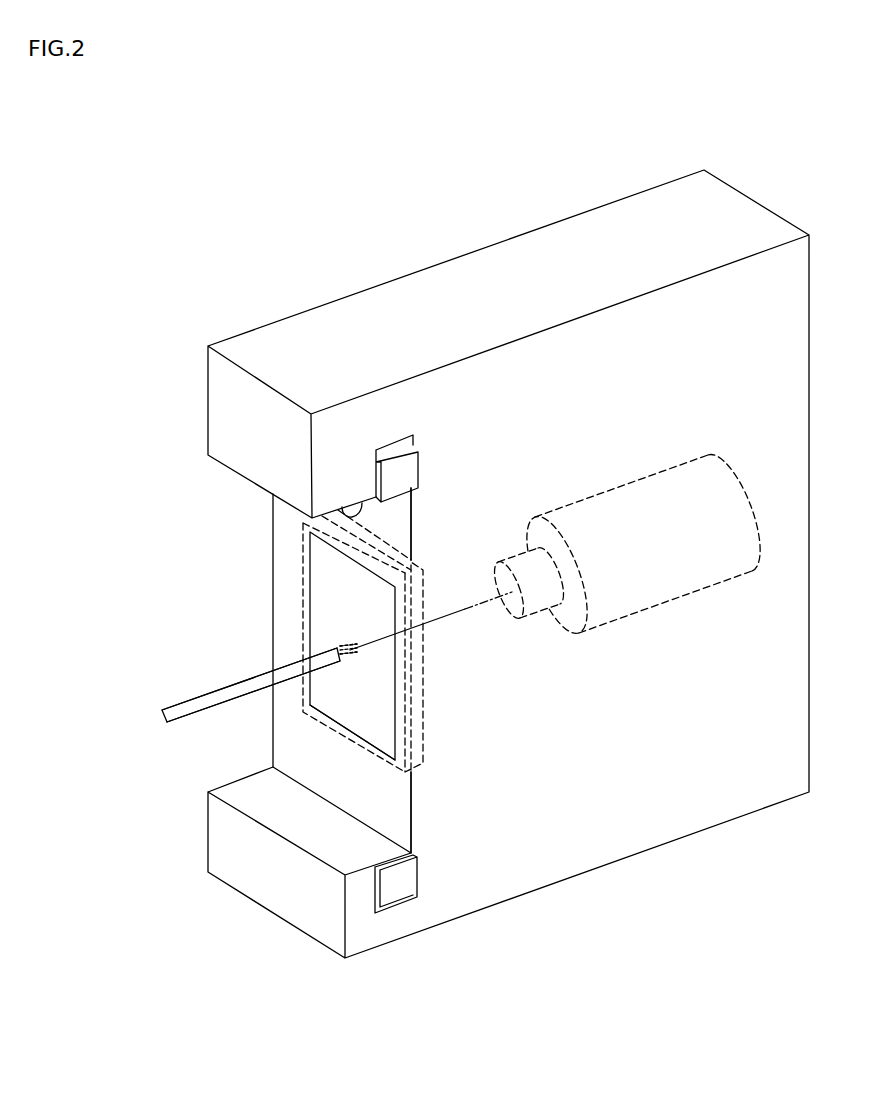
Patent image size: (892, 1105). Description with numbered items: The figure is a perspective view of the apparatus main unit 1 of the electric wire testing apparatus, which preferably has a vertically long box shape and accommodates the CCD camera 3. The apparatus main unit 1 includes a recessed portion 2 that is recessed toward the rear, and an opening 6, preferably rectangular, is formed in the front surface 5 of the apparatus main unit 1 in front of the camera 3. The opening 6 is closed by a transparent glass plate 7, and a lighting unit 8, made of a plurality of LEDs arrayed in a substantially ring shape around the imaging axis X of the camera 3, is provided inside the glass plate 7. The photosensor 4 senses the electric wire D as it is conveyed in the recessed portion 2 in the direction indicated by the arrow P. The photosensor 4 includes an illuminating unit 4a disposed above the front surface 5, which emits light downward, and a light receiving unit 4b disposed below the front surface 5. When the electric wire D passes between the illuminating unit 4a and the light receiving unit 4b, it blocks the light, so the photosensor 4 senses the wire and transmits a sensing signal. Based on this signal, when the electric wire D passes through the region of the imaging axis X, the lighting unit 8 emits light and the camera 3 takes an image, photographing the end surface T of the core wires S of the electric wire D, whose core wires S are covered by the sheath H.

The apparatus main unit 1 is at (586, 210).
The recessed portion 2 is at (338, 507).
The CCD camera 3 is at (681, 462).
The photosensor 4 is at (423, 619).
The illuminating unit 4a is at (405, 440).
The light receiving unit 4b is at (413, 896).
The front surface 5 is at (362, 802).
The opening 6 is at (366, 738).
The transparent glass plate 7 is at (334, 735).
The lighting unit 8 is at (423, 755).
The arrow P is at (193, 560).
The electric wire D is at (162, 710).
The sheath H is at (197, 697).
The core wires S is at (338, 641).
The end surface T is at (348, 647).
The imaging axis X is at (455, 610).